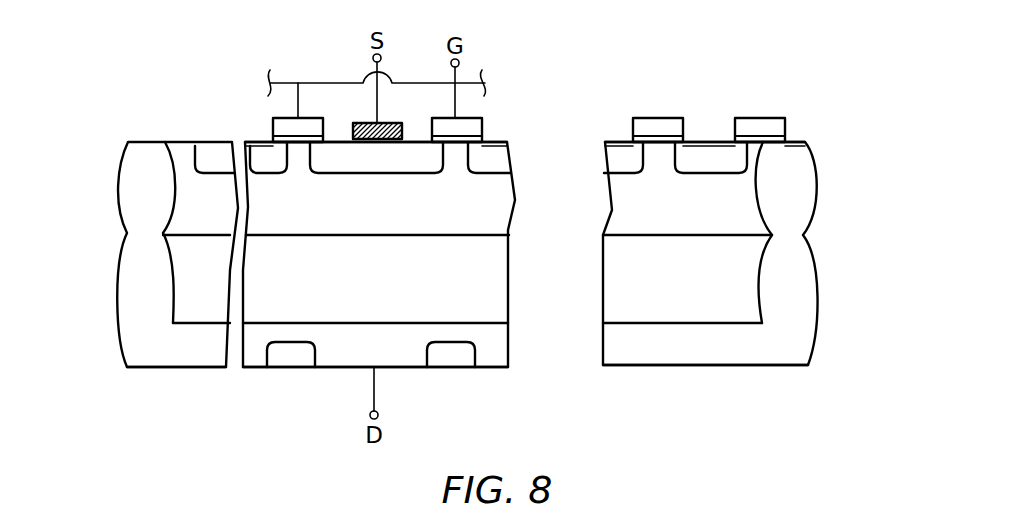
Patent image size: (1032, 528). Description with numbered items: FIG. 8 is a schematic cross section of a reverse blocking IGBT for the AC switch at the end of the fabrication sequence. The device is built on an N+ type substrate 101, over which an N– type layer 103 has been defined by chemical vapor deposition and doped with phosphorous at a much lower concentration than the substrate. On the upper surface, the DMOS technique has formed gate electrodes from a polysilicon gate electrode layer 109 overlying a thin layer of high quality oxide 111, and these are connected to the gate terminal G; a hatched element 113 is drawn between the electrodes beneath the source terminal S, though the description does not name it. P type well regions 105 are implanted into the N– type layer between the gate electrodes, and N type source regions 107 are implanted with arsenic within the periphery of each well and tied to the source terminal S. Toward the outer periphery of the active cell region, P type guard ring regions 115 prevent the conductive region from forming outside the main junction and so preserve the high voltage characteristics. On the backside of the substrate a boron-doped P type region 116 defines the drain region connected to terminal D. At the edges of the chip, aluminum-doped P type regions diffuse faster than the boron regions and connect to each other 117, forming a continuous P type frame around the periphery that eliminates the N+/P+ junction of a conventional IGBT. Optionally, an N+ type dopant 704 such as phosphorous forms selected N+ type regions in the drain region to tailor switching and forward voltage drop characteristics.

The N+ type substrate 101 is at (620, 275).
The N– type layer 103 is at (612, 215).
The P type well region 105 is at (495, 163).
The N type source region 107 is at (508, 143).
The gate electrode layer 109 is at (483, 119).
The thin layer of high quality oxide 111 is at (482, 136).
The gate 113 is at (360, 123).
The P type guard ring region 115 is at (210, 150).
The P type region defining a drain region 116 is at (713, 353).
The connected P type regions 117 is at (135, 202).
The N+ type dopant 704 is at (290, 355).